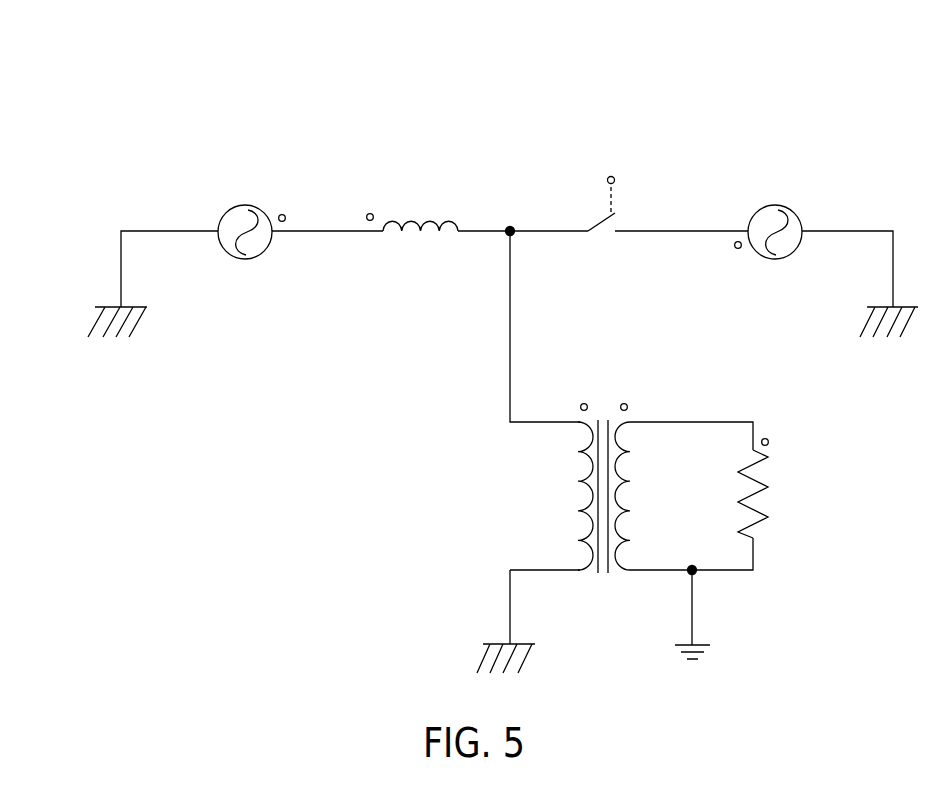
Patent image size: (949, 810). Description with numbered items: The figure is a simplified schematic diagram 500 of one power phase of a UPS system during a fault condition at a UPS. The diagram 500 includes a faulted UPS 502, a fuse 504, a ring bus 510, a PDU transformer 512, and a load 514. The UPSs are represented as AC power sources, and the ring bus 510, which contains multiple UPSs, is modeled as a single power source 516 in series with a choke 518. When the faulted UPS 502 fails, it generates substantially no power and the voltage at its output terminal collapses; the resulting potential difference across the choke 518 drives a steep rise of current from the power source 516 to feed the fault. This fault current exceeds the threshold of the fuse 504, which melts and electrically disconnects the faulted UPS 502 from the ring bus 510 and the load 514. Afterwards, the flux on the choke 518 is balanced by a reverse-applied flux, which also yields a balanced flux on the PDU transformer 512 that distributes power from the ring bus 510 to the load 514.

The schematic diagram 500 is at (732, 76).
The faulted UPS 502 is at (773, 204).
The fuse 504 is at (598, 195).
The ring bus 510 is at (300, 330).
The PDU transformer 512 is at (605, 602).
The load 514 is at (757, 507).
The power source 516 is at (245, 204).
The choke 518 is at (410, 210).